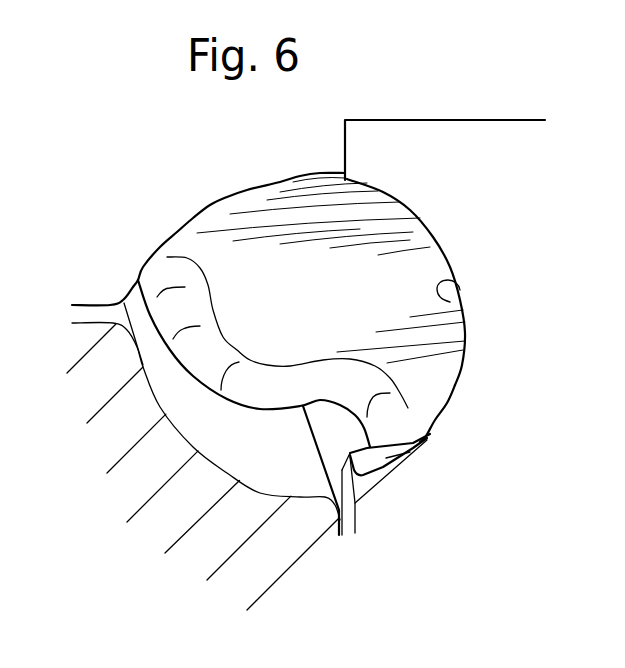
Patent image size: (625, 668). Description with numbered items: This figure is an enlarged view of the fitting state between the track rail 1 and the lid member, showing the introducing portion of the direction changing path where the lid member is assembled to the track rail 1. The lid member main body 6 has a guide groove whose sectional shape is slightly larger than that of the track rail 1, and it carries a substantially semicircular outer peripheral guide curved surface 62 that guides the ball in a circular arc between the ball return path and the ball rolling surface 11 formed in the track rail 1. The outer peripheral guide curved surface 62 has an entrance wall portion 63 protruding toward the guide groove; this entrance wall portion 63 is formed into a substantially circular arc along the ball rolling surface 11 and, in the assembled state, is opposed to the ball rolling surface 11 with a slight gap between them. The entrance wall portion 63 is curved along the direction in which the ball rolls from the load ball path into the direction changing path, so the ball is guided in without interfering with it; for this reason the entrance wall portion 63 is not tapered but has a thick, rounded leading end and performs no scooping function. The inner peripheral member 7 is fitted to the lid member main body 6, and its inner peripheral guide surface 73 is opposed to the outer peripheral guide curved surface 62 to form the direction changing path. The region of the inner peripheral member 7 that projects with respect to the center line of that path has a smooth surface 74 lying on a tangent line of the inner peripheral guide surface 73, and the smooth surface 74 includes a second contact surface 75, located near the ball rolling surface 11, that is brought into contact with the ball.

The track rail 1 is at (90, 511).
The ball rolling surface 11 is at (227, 457).
The lid member main body 6 is at (182, 162).
The outer peripheral guide curved surface 62 is at (267, 217).
The entrance wall portion 63 is at (164, 276).
The inner peripheral member 7 is at (486, 176).
The inner peripheral guide surface 73 is at (428, 305).
The smooth surface 74 is at (363, 487).
The second contact surface 75 is at (410, 457).